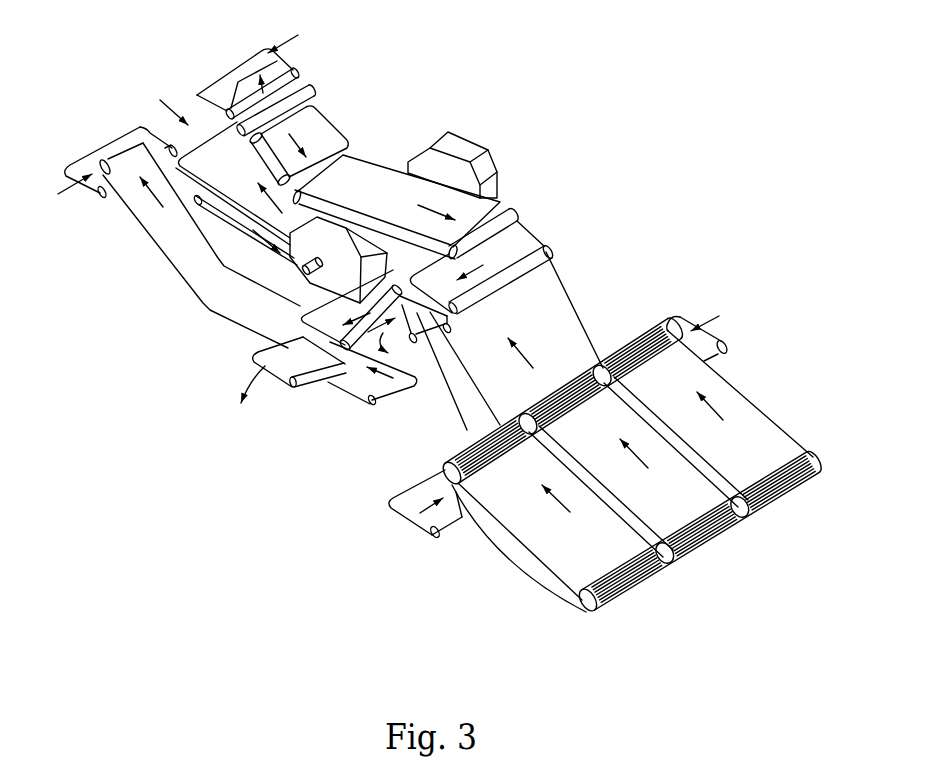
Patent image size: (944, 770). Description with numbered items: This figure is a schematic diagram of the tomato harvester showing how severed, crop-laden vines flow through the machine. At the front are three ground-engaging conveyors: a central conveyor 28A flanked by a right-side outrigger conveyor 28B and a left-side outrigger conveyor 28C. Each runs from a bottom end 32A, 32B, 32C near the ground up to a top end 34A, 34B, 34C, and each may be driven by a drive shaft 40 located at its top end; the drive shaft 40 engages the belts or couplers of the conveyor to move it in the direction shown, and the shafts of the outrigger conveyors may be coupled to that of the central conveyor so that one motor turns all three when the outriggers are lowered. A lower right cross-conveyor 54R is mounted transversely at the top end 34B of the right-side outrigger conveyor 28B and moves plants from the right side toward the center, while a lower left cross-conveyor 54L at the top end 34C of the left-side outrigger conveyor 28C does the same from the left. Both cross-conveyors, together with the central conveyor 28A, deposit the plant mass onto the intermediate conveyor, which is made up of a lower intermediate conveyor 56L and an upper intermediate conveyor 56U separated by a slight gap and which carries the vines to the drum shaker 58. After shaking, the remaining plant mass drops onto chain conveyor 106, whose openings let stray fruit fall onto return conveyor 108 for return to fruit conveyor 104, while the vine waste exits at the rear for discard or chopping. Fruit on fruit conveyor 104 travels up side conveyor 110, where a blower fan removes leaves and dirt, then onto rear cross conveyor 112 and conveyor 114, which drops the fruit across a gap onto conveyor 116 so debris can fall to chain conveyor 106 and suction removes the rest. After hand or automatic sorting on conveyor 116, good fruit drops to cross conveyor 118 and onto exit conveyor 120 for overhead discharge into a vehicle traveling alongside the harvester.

The central conveyor 28A is at (682, 498).
The right-side outrigger conveyor 28B is at (547, 528).
The left-side outrigger conveyor 28C is at (742, 407).
The bottom end of central conveyor 32A is at (697, 543).
The bottom end of right-side outrigger conveyor 32B is at (628, 592).
The bottom end of left-side outrigger conveyor 32C is at (755, 508).
The top end of central conveyor 34A is at (563, 390).
The top end of right-side outrigger conveyor 34B is at (477, 447).
The top end of left-side outrigger conveyor 34C is at (642, 340).
The drive shaft 40 is at (440, 468).
The lower left cross-conveyor 54L is at (708, 340).
The lower right cross-conveyor 54R is at (418, 520).
The lower intermediate conveyor 56L is at (510, 341).
The upper intermediate conveyor 56U is at (492, 205).
The drum shaker 58 is at (483, 141).
The fruit conveyor 104 is at (330, 322).
The chain conveyor 106 is at (262, 165).
The return conveyor 108 is at (207, 190).
The side conveyor 110 is at (173, 226).
The rear cross conveyor 112 is at (95, 150).
The conveyor 114 is at (187, 112).
The conveyor 116 is at (396, 207).
The cross conveyor 118 is at (523, 237).
The exit conveyor 120 is at (281, 379).